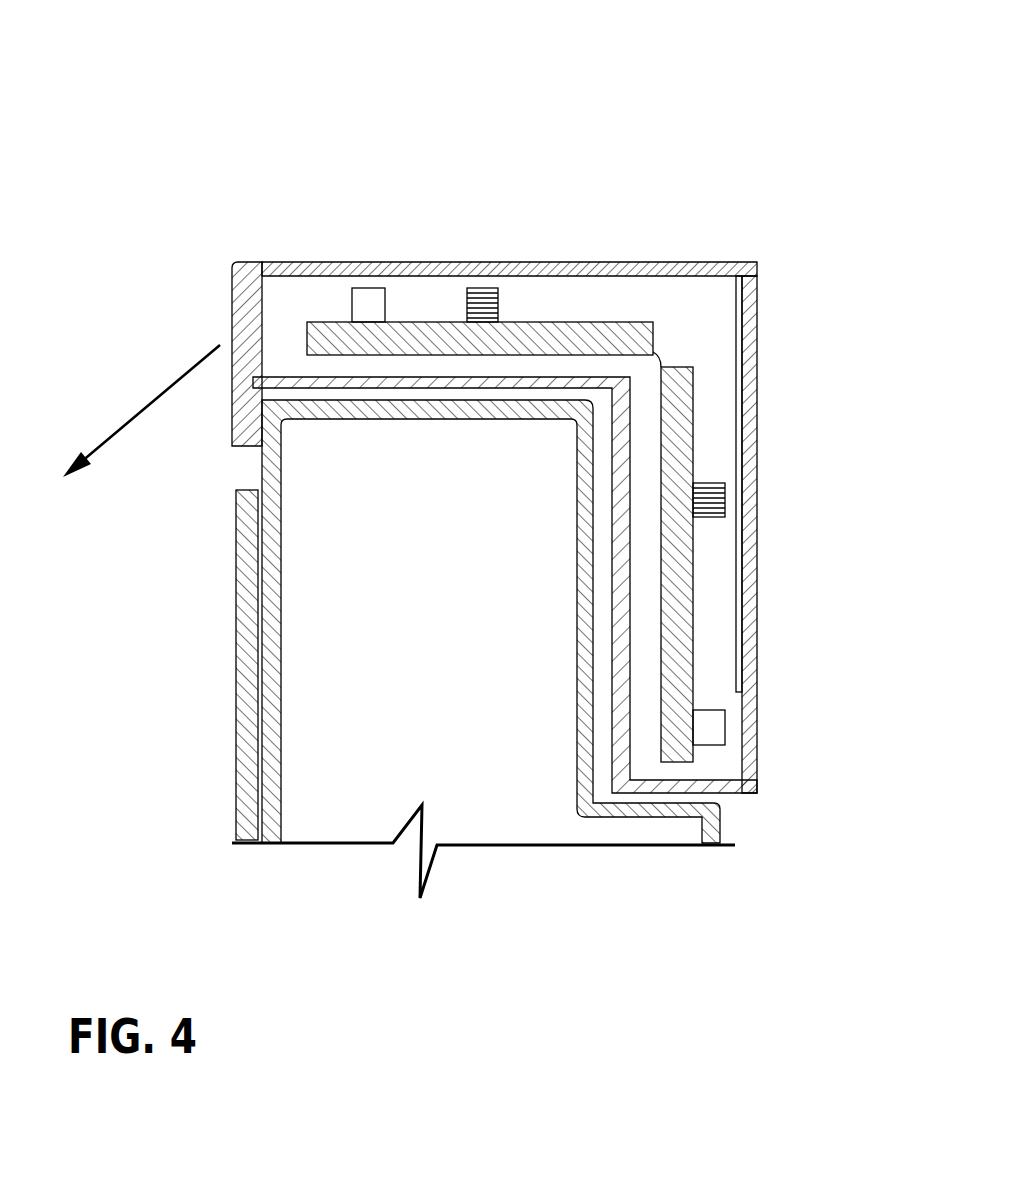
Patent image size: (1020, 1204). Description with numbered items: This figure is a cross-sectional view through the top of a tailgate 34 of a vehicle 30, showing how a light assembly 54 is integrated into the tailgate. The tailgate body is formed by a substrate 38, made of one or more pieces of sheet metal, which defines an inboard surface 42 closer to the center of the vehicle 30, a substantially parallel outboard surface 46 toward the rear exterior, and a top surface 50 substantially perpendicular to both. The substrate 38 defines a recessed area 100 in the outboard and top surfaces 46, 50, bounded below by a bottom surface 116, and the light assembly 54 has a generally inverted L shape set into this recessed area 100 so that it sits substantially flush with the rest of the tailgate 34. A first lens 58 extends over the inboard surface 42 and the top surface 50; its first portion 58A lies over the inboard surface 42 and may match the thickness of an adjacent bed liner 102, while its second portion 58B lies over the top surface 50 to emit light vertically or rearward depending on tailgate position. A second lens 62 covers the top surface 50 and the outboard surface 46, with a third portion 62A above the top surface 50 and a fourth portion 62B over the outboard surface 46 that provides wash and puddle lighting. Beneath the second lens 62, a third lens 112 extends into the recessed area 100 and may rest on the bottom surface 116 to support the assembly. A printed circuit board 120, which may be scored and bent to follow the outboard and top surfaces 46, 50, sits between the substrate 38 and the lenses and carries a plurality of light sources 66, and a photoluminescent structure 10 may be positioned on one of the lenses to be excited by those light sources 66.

The photoluminescent structure 10 is at (742, 553).
The vehicle 30 is at (435, 97).
The tailgate 34 is at (705, 173).
The substrate 38 is at (429, 663).
The inboard surface 42 is at (496, 663).
The outboard surface 46 is at (559, 633).
The top surface 50 is at (330, 407).
The light assembly 54 is at (745, 262).
The first lens 58 is at (260, 318).
The first portion 58A is at (247, 293).
The second portion 58B is at (317, 268).
The second lens 62 is at (554, 491).
The third portion 62A is at (608, 264).
The fourth portion 62B is at (755, 350).
The light sources 66 is at (377, 303).
The recessed area 100 is at (597, 705).
The bed liner 102 is at (250, 497).
The third lens 112 is at (757, 778).
The bottom surface 116 is at (657, 817).
The printed circuit board 120 is at (572, 335).